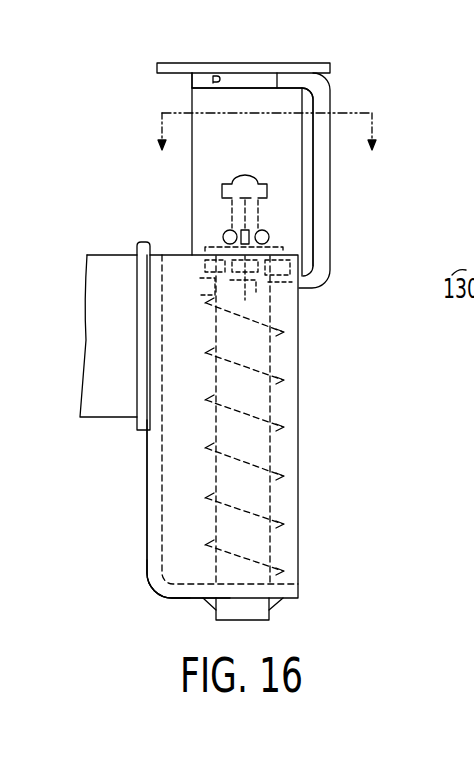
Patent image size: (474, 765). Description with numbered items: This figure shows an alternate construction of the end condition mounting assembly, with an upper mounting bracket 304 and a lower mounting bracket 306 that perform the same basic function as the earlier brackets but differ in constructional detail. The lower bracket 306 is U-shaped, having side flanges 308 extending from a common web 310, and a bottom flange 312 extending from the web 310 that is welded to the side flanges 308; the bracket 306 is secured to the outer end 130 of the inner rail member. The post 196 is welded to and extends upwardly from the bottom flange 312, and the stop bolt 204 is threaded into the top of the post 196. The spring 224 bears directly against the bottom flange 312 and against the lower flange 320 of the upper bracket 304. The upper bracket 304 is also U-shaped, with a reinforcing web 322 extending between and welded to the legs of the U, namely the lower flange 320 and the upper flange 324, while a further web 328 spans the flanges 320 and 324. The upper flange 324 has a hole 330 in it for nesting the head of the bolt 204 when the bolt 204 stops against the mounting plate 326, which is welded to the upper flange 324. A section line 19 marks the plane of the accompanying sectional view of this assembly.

The mounting plate 326 is at (157, 63).
The hole 330 is at (229, 55).
The upper flange 324 is at (192, 80).
The reinforcing web 322 is at (192, 211).
The web 328 is at (320, 224).
The upper mounting bracket 304 is at (337, 90).
The section line 19- 19 is at (266, 149).
The stop bolt 204 is at (266, 182).
The outer end of inner rail member 130 is at (108, 417).
The side flanges 308 is at (298, 467).
The web 310 is at (147, 523).
The lower mounting bracket 306 is at (153, 591).
The post 196 is at (298, 362).
The spring 224 is at (283, 417).
The lower flange 320 is at (195, 292).
The bottom flange 312 is at (300, 600).